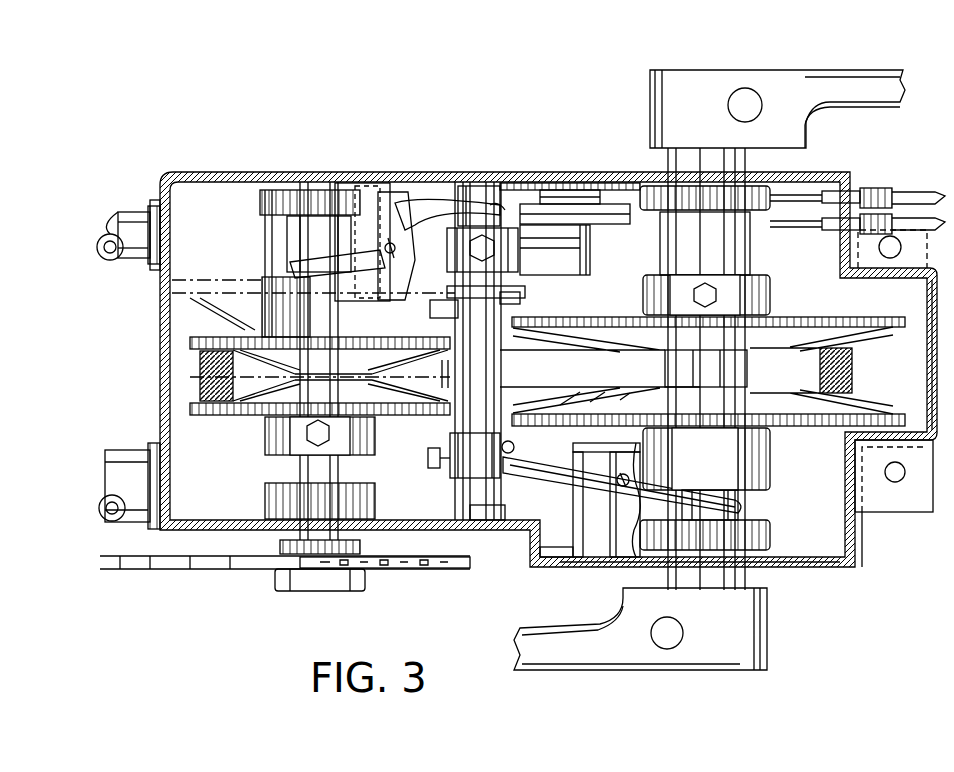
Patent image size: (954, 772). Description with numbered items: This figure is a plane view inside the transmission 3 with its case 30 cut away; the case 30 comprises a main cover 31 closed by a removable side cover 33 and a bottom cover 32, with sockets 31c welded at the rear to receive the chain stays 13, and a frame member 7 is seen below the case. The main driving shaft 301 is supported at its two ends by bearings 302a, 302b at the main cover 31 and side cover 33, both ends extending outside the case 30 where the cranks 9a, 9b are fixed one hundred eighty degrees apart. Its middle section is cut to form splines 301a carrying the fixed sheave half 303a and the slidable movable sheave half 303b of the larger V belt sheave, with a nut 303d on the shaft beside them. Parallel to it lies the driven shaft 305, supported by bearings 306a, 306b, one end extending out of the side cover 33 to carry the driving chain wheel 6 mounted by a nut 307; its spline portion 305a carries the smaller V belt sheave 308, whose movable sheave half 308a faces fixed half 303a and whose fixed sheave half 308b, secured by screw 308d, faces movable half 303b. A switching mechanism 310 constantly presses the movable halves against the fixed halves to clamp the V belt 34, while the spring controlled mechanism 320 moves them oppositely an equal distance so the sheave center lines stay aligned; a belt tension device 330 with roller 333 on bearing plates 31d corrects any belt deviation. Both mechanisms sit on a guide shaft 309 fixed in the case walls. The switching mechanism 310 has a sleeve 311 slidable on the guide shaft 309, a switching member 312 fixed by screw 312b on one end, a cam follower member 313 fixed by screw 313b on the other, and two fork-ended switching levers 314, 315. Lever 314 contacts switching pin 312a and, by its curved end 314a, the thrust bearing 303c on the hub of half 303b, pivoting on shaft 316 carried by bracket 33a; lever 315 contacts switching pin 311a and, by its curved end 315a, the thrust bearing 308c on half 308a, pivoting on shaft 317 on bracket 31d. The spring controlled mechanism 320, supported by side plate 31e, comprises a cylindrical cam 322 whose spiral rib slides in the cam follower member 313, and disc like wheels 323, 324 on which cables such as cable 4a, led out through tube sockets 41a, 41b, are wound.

The transmission 3 is at (474, 153).
The case 30 is at (862, 514).
The bottom cover 32 is at (948, 358).
The side cover 33 is at (815, 568).
The bracket 33a is at (605, 545).
The V belt 34 is at (200, 375).
The main cover 31 is at (399, 209).
The socket 31c is at (152, 205).
The bearing plate 31d is at (362, 207).
The side plate 31e is at (512, 292).
The chain stay 13 is at (112, 235).
The base plate 7 is at (172, 572).
The driving chain wheel 6 is at (400, 572).
The crank 9a is at (558, 656).
The crank 9b is at (862, 78).
The cable 4a is at (857, 219).
The tube socket 41a is at (893, 249).
The tube socket 41b is at (912, 192).
The main driving shaft 301 is at (700, 585).
The splines 301a is at (748, 248).
The bearing 302a is at (762, 532).
The bearing 302b is at (745, 190).
The fixed sheave half 303a is at (908, 304).
The movable sheave half 303b is at (852, 372).
The thrust bearing 303c is at (770, 480).
The nut 303d is at (712, 295).
The driven shaft 305 is at (362, 543).
The spline portion 305a is at (292, 236).
The bearing 306a is at (285, 500).
The bearing 306b is at (285, 206).
The nut 307 is at (326, 594).
The V belt sheave 308 is at (279, 360).
The movable sheave half 308a is at (200, 340).
The fixed sheave half 308b is at (200, 412).
The thrust bearing 308c is at (290, 280).
The screw 308d is at (312, 434).
The guide shaft 309 is at (480, 520).
The switching mechanism 310 is at (478, 470).
The sleeve 311 is at (510, 329).
The switching pin 311a is at (498, 186).
The switching member 312 is at (490, 478).
The switching pin 312a is at (515, 448).
The screw 312b is at (432, 458).
The cam follower member 313 is at (498, 256).
The screw 313b is at (505, 290).
The switching lever 314 is at (688, 478).
The curved end 314a is at (745, 503).
The switching lever 315 is at (418, 205).
The curved end 315a is at (330, 282).
The shaft 316 is at (618, 485).
The shaft 317 is at (386, 215).
The spring controlled mechanism 320 is at (592, 183).
The cylindrical cam 322 is at (592, 258).
The disc like wheel 323 is at (575, 186).
The disc like wheel 324 is at (546, 186).
The belt tension device 330 is at (443, 323).
The roller 333 is at (445, 372).